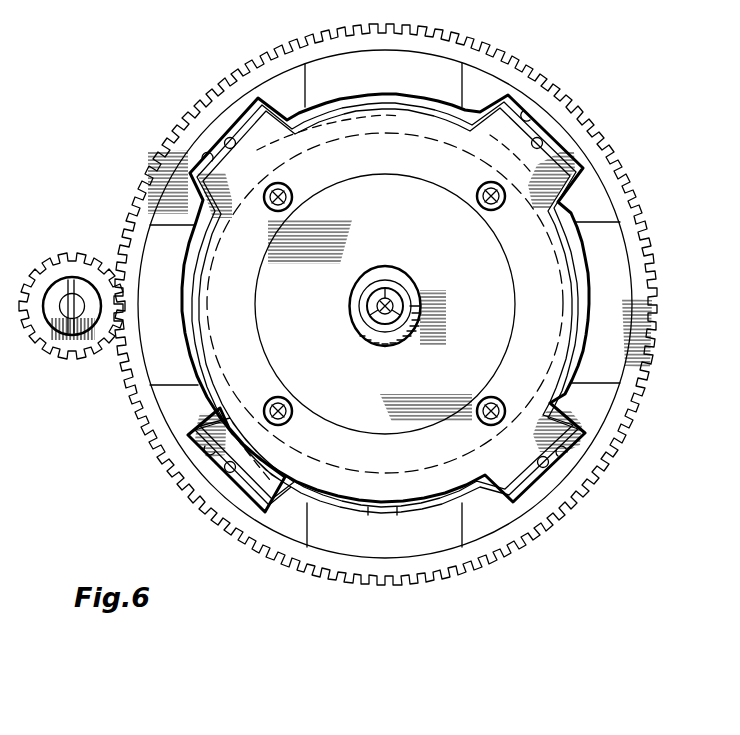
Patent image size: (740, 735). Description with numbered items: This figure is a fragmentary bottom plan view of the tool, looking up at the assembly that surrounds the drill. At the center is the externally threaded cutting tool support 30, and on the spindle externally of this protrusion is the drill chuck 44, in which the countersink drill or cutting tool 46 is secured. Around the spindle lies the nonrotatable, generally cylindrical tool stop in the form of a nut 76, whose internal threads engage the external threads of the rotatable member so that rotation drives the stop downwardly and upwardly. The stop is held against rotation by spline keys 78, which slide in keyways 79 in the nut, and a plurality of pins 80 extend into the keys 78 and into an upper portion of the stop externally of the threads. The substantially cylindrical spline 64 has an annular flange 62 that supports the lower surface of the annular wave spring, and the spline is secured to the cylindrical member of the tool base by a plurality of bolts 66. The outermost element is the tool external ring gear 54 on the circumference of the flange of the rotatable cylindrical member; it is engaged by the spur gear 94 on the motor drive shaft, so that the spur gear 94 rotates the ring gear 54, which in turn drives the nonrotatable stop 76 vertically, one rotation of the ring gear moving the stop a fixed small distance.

The cutting tool support 30 is at (468, 272).
The drill chuck 44 is at (408, 329).
The cutting tool 46 is at (390, 345).
The external ring gear 54 is at (128, 222).
The annular flange 62 is at (347, 128).
The cylindrical spline 64 is at (399, 520).
The bolts 66 is at (298, 400).
The nut 76 is at (592, 202).
The spline keys 78 is at (248, 100).
The keyways 79 is at (203, 150).
The pins 80 is at (229, 138).
The spur gear 94 is at (70, 360).